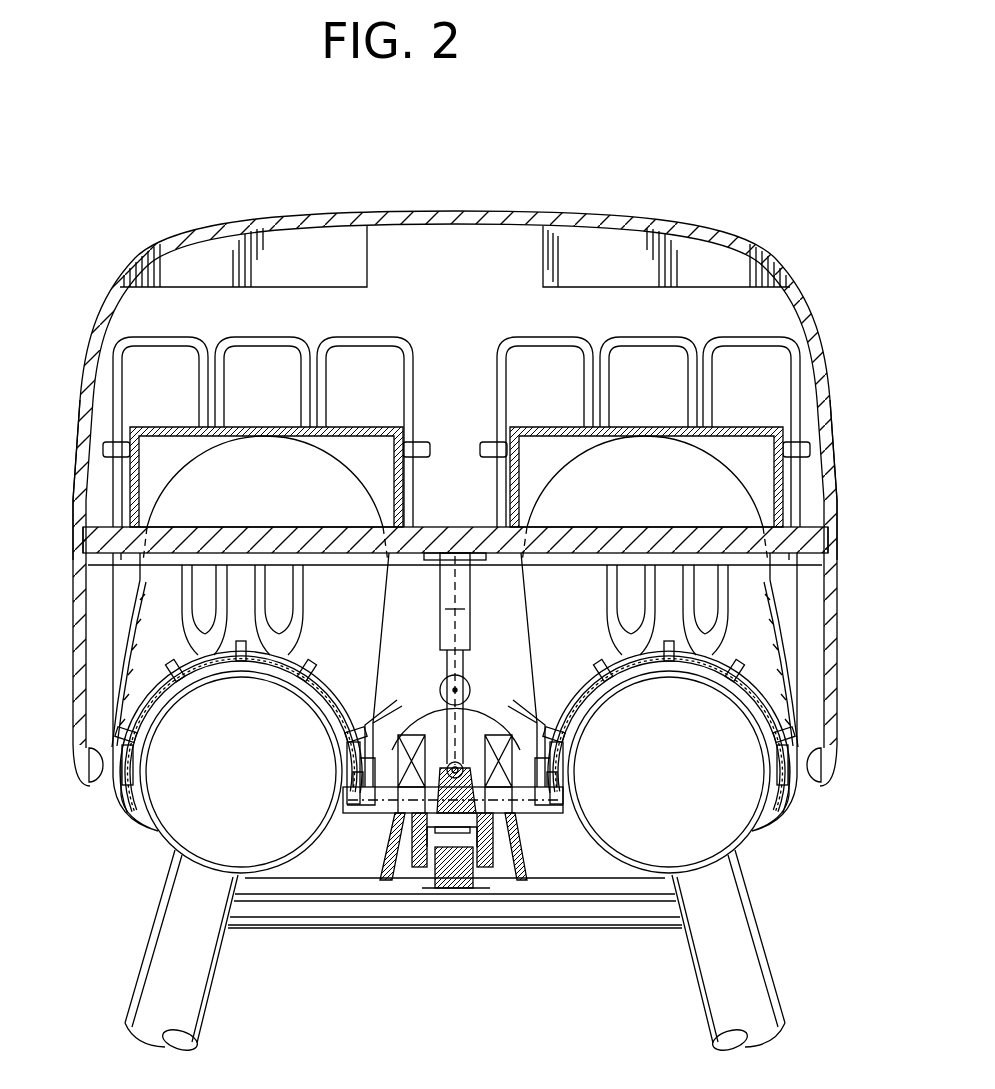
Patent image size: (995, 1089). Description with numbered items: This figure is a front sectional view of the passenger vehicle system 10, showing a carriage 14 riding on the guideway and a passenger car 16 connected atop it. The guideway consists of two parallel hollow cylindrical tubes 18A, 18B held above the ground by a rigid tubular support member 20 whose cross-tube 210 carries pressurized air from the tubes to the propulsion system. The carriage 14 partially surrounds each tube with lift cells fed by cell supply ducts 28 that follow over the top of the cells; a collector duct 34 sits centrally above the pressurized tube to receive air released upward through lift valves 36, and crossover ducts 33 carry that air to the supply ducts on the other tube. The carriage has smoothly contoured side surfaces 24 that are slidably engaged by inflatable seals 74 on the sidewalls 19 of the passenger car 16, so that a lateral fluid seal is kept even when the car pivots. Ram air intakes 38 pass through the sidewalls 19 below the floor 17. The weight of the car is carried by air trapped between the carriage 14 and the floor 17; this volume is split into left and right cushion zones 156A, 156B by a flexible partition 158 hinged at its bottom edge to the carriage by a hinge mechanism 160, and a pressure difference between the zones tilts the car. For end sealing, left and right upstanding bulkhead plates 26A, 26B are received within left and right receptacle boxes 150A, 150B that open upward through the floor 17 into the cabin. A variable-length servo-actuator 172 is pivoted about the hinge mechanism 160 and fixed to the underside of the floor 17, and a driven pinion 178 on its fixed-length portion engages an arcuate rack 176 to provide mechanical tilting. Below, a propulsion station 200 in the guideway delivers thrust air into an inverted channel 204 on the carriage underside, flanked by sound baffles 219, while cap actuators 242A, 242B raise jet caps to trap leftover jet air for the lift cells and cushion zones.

The passenger vehicle system 10 is at (593, 142).
The carriage 14 is at (362, 815).
The passenger car 16 is at (430, 214).
The floor 17 is at (430, 528).
The guideway tube 18A is at (168, 852).
The guideway tube 18B is at (740, 852).
The sidewall 19 is at (74, 420).
The support member 20 is at (216, 992).
The side surface 24 is at (130, 625).
The left bulkhead plate 26A is at (335, 452).
The right bulkhead plate 26B is at (720, 455).
The cell supply duct 28 is at (216, 652).
The crossover duct 33 is at (370, 695).
The collector duct 34 is at (663, 624).
The lift valve 36 is at (672, 670).
The intake 38 is at (84, 540).
The inflatable seal 74 is at (100, 786).
The left receptacle box 150A is at (250, 430).
The right receptacle box 150B is at (632, 430).
The left cushion zone 156A is at (438, 648).
The right cushion zone 156B is at (532, 648).
The partition 158 is at (440, 609).
The hinge mechanism 160 is at (466, 766).
The servo-actuator 172 is at (440, 582).
The arcuate rack 176 is at (444, 718).
The pinion 178 is at (468, 690).
The propulsion station 200 is at (478, 880).
The inverted channel 204 is at (498, 844).
The cross-tube 210 is at (378, 930).
The sound baffle 219 is at (380, 860).
The cap actuator 242A is at (366, 771).
The cap actuator 242B is at (544, 771).